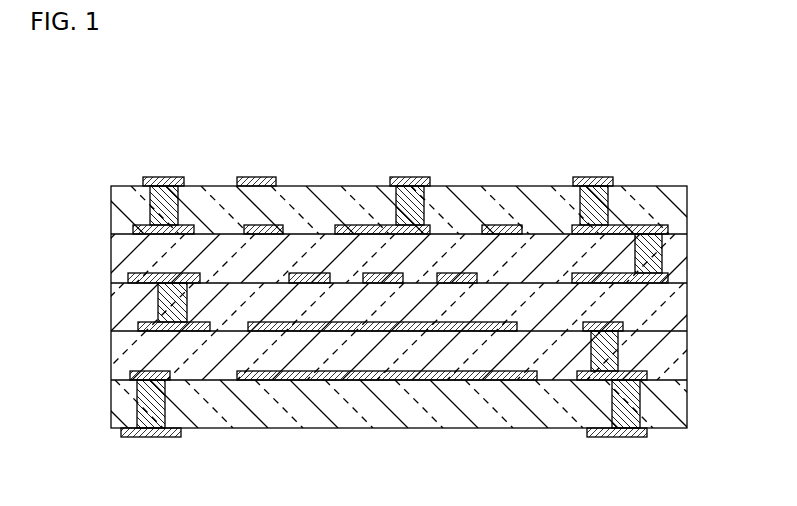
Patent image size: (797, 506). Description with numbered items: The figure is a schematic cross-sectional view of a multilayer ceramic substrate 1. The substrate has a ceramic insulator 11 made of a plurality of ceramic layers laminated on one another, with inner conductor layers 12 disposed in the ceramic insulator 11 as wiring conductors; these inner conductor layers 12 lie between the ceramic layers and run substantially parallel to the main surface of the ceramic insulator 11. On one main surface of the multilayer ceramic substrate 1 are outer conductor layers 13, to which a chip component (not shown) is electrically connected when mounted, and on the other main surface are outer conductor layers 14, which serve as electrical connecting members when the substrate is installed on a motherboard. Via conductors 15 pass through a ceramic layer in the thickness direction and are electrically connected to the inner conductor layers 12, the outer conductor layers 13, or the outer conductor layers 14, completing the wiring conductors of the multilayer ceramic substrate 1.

The multilayer ceramic substrate 1 is at (113, 146).
The ceramic insulator 11 is at (651, 186).
The inner conductor layers 12 is at (180, 303).
The outer conductor layers 13 is at (262, 177).
The outer conductor layers 14 is at (146, 438).
The via conductors 15 is at (620, 348).